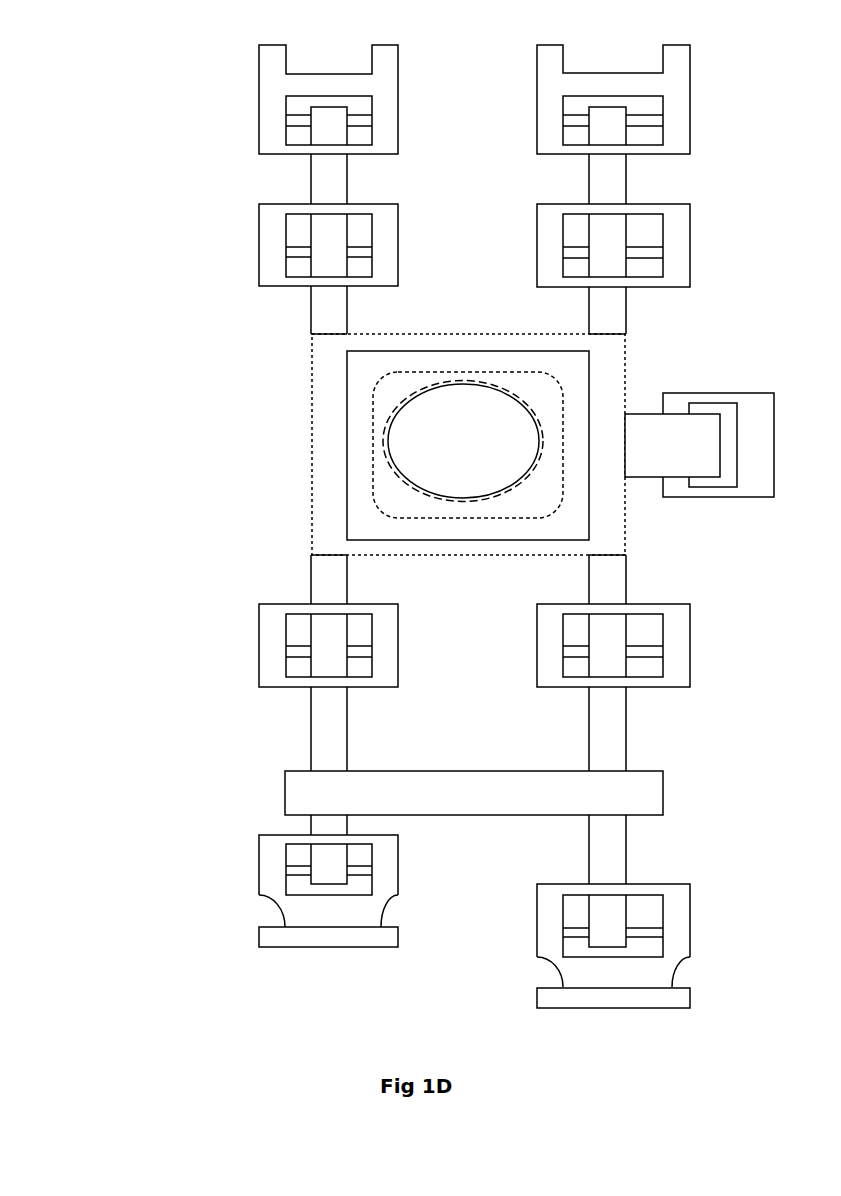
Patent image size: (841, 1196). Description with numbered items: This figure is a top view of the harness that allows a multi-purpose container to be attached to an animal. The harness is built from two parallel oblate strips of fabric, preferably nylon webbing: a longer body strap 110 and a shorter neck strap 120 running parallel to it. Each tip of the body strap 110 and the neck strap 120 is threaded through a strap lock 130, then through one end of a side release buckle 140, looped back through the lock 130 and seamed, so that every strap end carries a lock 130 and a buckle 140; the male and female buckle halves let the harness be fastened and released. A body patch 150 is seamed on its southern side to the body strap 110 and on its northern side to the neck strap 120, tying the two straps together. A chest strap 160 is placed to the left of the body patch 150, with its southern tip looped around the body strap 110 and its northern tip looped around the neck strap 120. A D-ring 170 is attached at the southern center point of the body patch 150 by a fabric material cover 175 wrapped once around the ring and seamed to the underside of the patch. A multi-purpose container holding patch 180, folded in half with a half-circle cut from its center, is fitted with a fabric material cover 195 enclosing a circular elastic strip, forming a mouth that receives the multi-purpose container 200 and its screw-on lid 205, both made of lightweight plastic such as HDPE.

The body strap 110 is at (630, 718).
The neck strap 120 is at (302, 718).
The strap lock 130 is at (259, 235).
The side release buckle 140 is at (259, 84).
The body patch 150 is at (311, 361).
The chest strap 160 is at (275, 783).
The D-ring 170 is at (750, 392).
The fabric material cover 175 is at (638, 412).
The multi-purpose container holding patch 180 is at (346, 507).
The fabric material cover 195 is at (383, 424).
The multi-purpose container 200 is at (370, 382).
The screw-on lid 205 is at (387, 446).